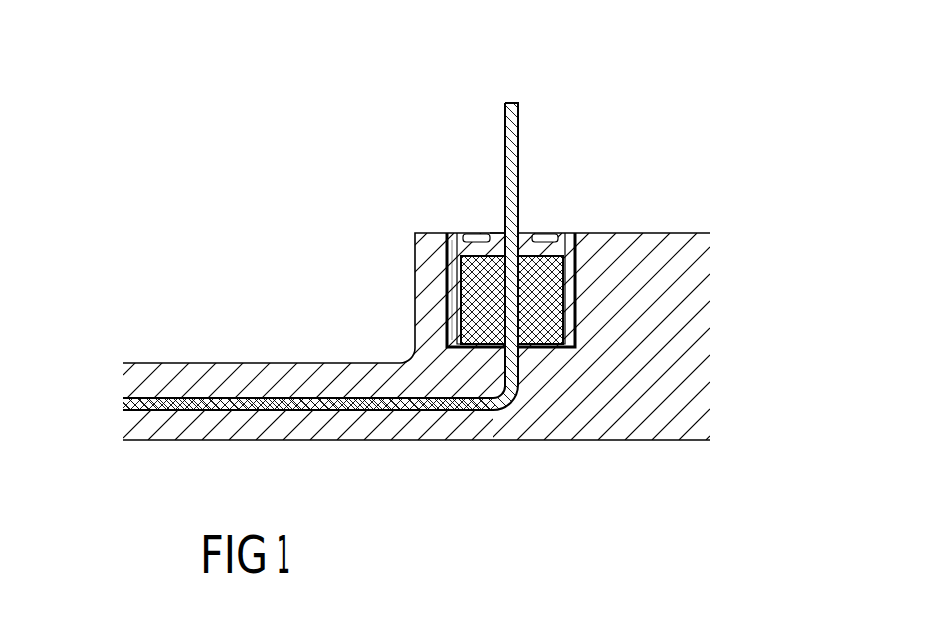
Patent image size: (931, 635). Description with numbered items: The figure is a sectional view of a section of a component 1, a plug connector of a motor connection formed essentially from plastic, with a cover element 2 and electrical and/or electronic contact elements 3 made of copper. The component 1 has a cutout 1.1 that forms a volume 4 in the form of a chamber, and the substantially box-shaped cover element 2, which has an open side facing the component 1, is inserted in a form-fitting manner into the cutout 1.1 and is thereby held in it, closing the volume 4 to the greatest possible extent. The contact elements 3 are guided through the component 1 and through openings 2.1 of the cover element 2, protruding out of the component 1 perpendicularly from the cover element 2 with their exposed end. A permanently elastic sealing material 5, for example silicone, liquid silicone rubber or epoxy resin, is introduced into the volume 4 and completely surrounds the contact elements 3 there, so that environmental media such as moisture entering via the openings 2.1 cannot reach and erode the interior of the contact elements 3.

The component 1 is at (668, 248).
The cutout 1.1 is at (577, 318).
The cover element 2 is at (567, 233).
The openings 2.1 is at (502, 233).
The contact elements 3 is at (513, 103).
The volume 4 is at (453, 233).
The sealing material 5 is at (461, 302).